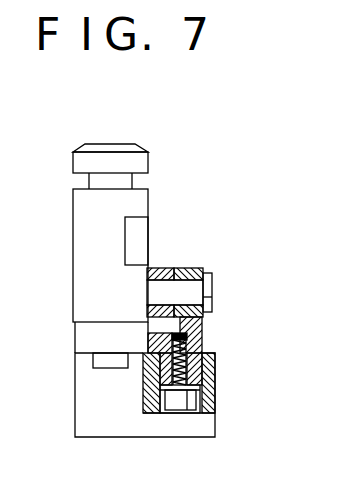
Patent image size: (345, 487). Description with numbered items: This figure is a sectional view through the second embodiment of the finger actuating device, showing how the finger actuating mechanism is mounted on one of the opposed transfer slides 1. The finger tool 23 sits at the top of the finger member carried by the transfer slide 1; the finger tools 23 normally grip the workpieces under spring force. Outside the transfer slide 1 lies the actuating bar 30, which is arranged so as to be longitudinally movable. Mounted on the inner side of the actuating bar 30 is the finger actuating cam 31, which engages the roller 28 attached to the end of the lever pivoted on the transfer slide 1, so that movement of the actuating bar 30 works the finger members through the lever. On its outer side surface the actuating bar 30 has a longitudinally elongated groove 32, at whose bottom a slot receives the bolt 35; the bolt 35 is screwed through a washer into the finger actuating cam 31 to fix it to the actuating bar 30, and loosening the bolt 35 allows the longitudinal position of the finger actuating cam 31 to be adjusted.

The transfer slide 1 is at (100, 401).
The finger tool 23 is at (136, 163).
The roller 28 is at (190, 268).
The actuating bar 30 is at (197, 388).
The finger actuating cam 31 is at (193, 334).
The elongated groove 32 is at (203, 404).
The bolt 35 is at (178, 373).